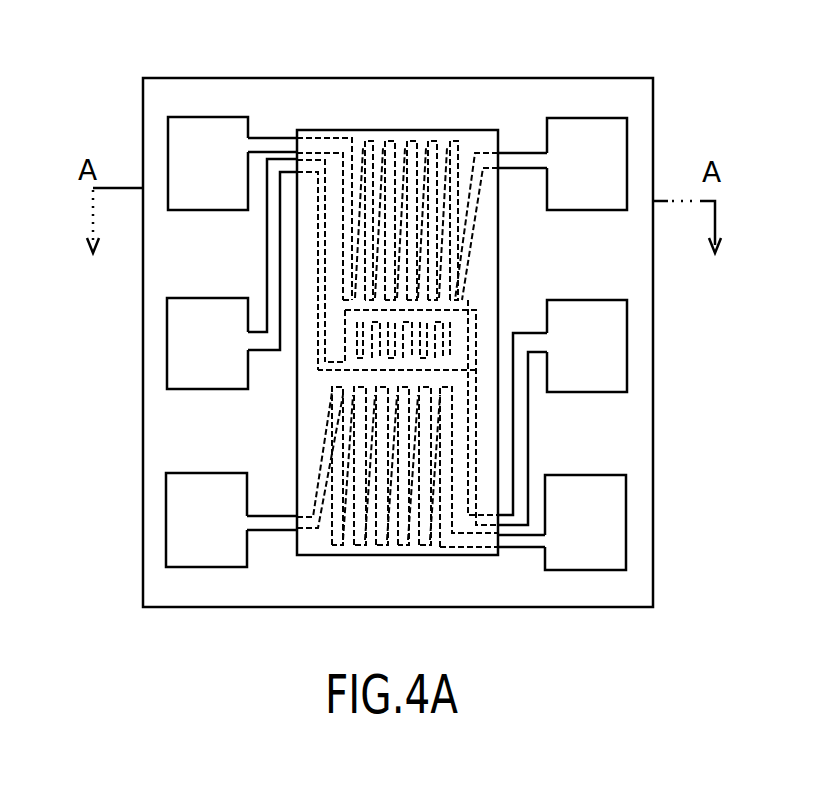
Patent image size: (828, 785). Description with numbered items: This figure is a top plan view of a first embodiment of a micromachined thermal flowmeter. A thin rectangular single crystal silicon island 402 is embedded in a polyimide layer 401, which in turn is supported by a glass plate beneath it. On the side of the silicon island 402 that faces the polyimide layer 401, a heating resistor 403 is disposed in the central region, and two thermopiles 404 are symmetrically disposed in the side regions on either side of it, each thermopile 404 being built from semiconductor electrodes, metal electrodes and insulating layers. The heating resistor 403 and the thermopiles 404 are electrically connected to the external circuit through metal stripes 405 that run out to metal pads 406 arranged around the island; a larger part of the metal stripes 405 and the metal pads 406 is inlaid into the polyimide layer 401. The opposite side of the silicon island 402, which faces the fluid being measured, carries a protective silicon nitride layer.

The polyimide layer 401 is at (270, 118).
The single crystal silicon island 402 is at (483, 137).
The heating resistor 403 is at (437, 345).
The thermopile 404 is at (443, 457).
The metal stripe 405 is at (267, 275).
The metal pad 406 is at (178, 497).